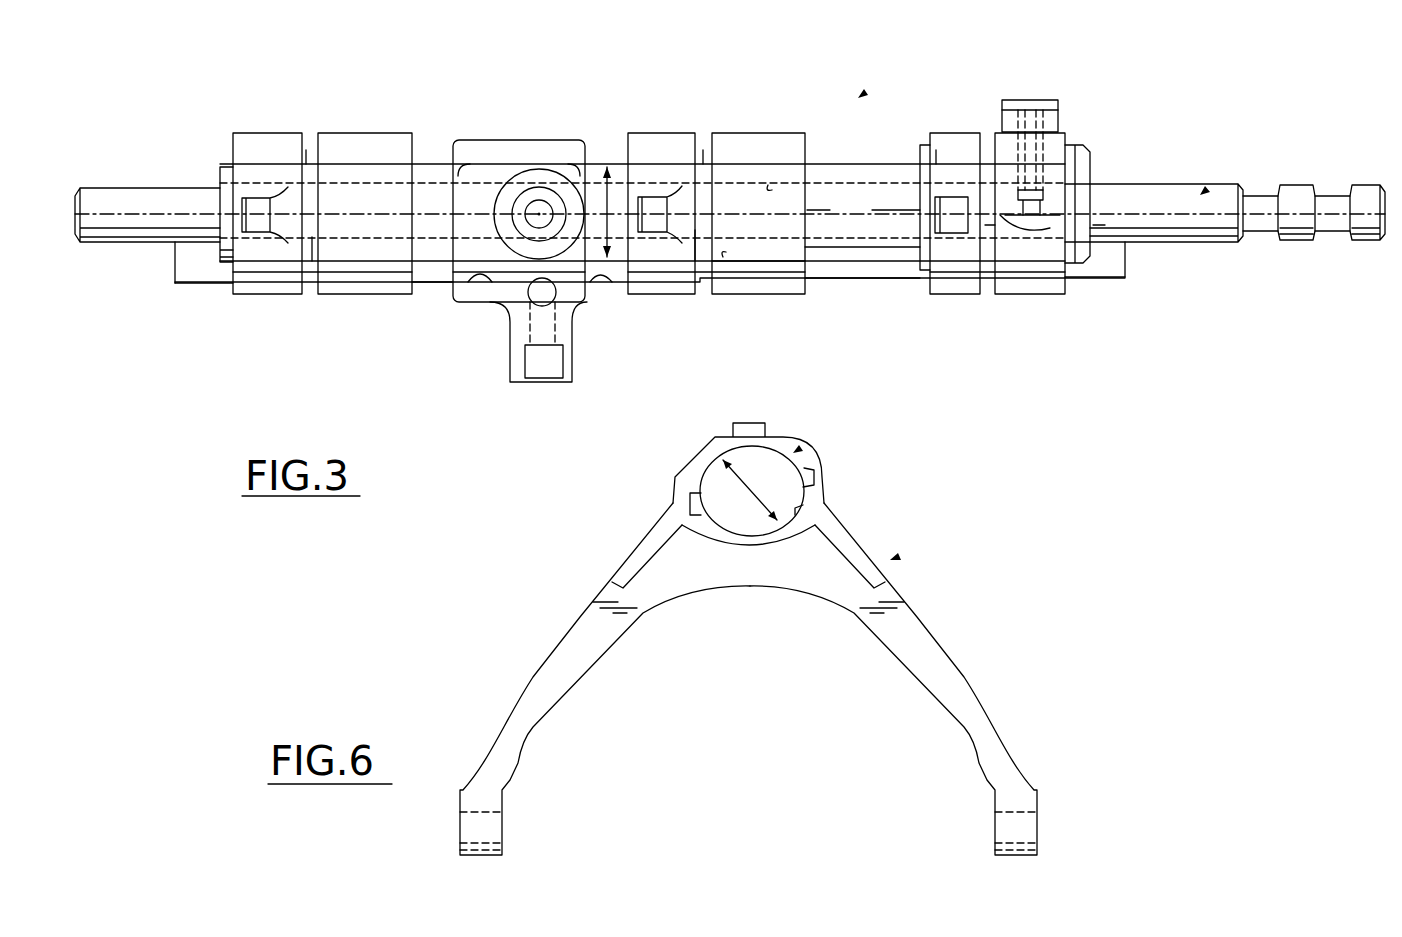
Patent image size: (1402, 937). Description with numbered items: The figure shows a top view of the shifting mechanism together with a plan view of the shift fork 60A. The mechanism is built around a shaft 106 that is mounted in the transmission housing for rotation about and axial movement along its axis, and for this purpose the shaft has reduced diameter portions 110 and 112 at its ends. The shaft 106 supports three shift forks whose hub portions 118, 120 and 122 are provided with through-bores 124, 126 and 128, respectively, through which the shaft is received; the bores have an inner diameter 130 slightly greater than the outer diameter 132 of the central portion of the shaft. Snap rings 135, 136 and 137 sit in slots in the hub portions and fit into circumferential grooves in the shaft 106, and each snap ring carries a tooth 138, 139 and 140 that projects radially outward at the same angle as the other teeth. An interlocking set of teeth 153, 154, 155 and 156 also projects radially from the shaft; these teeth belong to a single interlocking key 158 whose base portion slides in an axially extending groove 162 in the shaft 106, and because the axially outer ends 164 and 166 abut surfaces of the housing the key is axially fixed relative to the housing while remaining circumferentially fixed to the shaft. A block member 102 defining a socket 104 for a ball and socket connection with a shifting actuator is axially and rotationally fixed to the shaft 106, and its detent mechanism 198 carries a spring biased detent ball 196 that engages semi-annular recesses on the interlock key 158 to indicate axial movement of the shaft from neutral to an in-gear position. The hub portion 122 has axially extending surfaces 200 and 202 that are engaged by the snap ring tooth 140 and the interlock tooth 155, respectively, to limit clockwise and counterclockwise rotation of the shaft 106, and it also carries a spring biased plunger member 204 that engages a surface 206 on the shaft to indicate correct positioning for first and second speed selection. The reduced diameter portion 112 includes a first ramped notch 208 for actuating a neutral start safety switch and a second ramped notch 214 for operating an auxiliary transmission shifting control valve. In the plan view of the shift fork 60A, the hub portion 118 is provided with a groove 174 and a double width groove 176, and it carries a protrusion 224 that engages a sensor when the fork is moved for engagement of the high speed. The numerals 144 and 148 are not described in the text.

In FIG. 6, the shift fork 60A is at (895, 558).
In FIG. 3, the block member 102 is at (478, 145).
In FIG. 3, the socket 104 is at (540, 205).
In FIG. 3, the shaft 106 is at (862, 96).
In FIG. 3, the reduced diameter portion 110 is at (100, 197).
In FIG. 3, the reduced diameter portion 112 is at (1197, 213).
In FIG. 3, the hub portion 118 is at (275, 140).
In FIG. 6, the hub portion 118 is at (775, 447).
In FIG. 3, the hub portion 120 is at (735, 145).
In FIG. 3, the hub portion 122 is at (1057, 142).
In FIG. 3, the through-bore 124 is at (345, 187).
In FIG. 6, the through-bore 124 is at (808, 488).
In FIG. 3, the through-bore 126 is at (768, 185).
In FIG. 3, the through-bore 128 is at (958, 160).
In FIG. 6, the inner bore diameter 130 is at (795, 452).
In FIG. 3, the outer diameter 132 is at (615, 230).
In FIG. 3, the snap ring 135 is at (312, 237).
In FIG. 3, the snap ring 136 is at (695, 230).
In FIG. 3, the snap ring 137 is at (988, 227).
In FIG. 3, the snap ring tooth 138 is at (306, 150).
In FIG. 3, the snap ring tooth 139 is at (703, 150).
In FIG. 3, the snap ring tooth 140 is at (985, 158).
In FIG. 3, the nut 144 is at (1077, 157).
In FIG. 3, the rail flat 148 is at (863, 212).
In FIG. 3, the interlock tooth 153 is at (198, 283).
In FIG. 3, the interlock tooth 154 is at (428, 273).
In FIG. 3, the interlock tooth 155 is at (858, 270).
In FIG. 3, the interlock tooth 156 is at (1097, 270).
In FIG. 3, the interlocking key 158 is at (763, 250).
In FIG. 3, the axially extending groove 162 is at (723, 257).
In FIG. 3, the axially outer end 164 is at (173, 270).
In FIG. 3, the axially outer end 166 is at (1128, 262).
In FIG. 6, the groove 174 is at (705, 503).
In FIG. 6, the double width groove 176 is at (793, 498).
In FIG. 3, the detent ball 196 is at (560, 300).
In FIG. 3, the detent mechanism 198 is at (575, 360).
In FIG. 3, the axially extending surface 200 is at (936, 150).
In FIG. 3, the axially extending surface 202 is at (925, 270).
In FIG. 3, the spring biased plunger member 204 is at (1055, 143).
In FIG. 3, the surface 206 is at (1093, 225).
In FIG. 3, the first ramped notch 208 is at (1335, 203).
In FIG. 3, the second ramped notch 214 is at (1263, 205).
In FIG. 3, the protrusion 224 is at (255, 222).